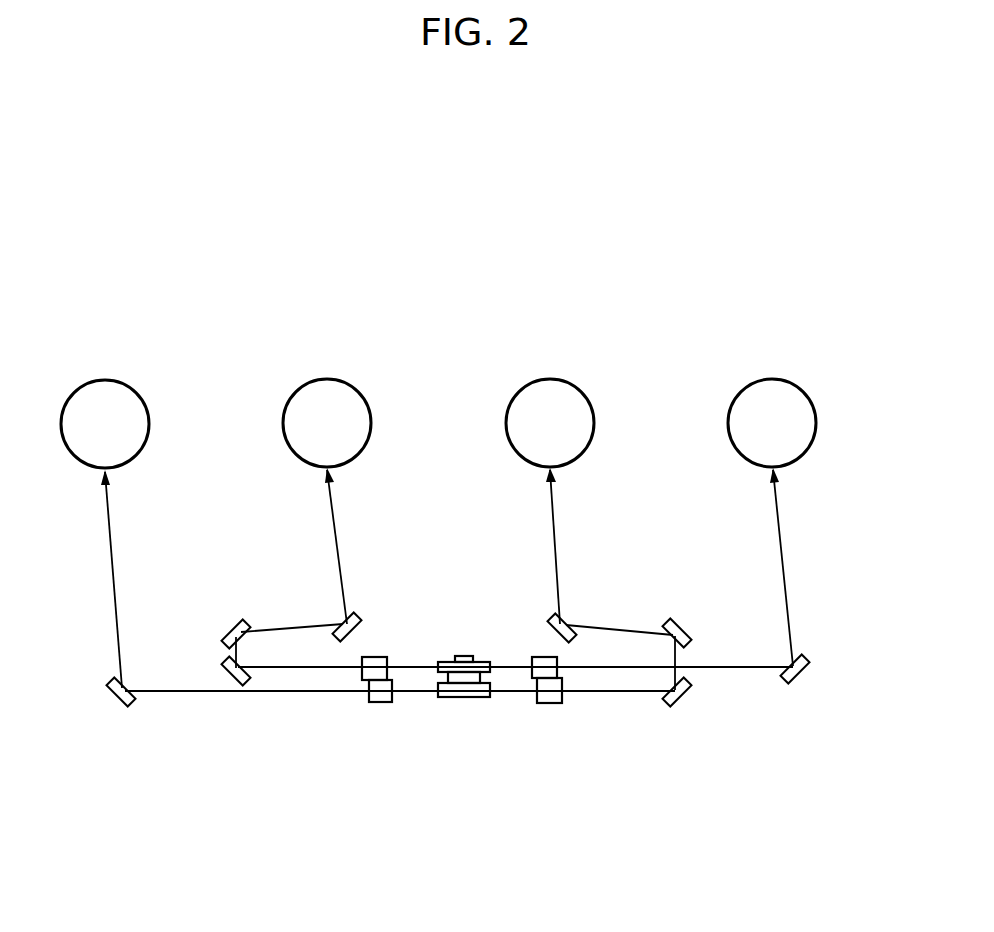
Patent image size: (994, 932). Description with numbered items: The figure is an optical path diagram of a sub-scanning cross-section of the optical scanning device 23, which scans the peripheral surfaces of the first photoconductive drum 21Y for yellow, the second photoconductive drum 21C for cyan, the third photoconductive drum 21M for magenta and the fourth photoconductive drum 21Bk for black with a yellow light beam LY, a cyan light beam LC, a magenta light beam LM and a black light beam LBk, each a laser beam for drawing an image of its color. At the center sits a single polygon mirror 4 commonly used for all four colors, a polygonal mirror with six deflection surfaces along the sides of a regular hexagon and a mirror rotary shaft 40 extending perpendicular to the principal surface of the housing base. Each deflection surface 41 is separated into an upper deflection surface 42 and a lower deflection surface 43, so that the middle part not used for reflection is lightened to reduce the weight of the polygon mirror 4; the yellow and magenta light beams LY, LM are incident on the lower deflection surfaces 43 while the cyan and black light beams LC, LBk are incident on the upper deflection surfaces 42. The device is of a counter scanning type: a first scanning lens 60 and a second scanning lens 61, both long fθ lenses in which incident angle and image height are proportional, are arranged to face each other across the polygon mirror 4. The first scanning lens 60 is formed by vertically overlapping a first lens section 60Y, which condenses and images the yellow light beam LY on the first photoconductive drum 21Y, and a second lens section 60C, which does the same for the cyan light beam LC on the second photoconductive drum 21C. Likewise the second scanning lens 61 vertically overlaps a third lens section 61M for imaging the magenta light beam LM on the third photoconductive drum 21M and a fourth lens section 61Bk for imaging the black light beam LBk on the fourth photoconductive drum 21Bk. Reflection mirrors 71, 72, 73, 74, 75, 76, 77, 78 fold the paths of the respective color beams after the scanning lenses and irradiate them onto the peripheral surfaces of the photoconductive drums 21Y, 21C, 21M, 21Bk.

The first photoconductive drum 21Y is at (108, 381).
The second photoconductive drum 21C is at (328, 380).
The third photoconductive drum 21M is at (552, 380).
The fourth photoconductive drum 21Bk is at (774, 380).
The yellow light beam LY is at (110, 518).
The cyan light beam LC is at (334, 510).
The magenta light beam LM is at (557, 510).
The black light beam LBk is at (779, 509).
The polygon mirror 4 is at (458, 653).
The optical scanning device 23 is at (838, 590).
The mirror rotary shaft 40 is at (463, 655).
The deflection surface 41 is at (458, 734).
The upper deflection surface 42 is at (443, 668).
The lower deflection surface 43 is at (484, 690).
The first scanning lens 60 is at (344, 731).
The second lens section 60C is at (372, 669).
The first lens section 60Y is at (376, 722).
The second scanning lens 61 is at (577, 731).
The third lens section 61M is at (540, 721).
The fourth lens section 61Bk is at (553, 672).
The reflection mirror 71 is at (114, 702).
The reflection mirror 72 is at (226, 673).
The reflection mirror 73 is at (228, 628).
The reflection mirror 74 is at (352, 613).
The reflection mirror 75 is at (688, 702).
The reflection mirror 76 is at (681, 621).
The reflection mirror 77 is at (554, 618).
The reflection mirror 78 is at (804, 677).